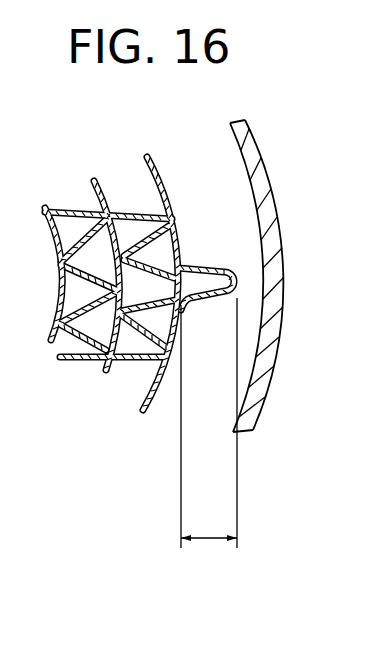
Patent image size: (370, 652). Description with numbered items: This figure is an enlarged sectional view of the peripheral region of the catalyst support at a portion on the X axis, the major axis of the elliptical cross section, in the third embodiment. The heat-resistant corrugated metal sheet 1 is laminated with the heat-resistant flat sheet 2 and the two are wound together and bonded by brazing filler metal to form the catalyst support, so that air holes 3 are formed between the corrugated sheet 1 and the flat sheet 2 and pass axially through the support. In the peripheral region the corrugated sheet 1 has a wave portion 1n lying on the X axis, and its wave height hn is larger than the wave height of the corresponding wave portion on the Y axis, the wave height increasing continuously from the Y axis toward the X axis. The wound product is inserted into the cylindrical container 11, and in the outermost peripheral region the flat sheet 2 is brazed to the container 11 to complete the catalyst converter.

The corrugated metal sheet 1 is at (114, 210).
The flat sheet 2 is at (153, 167).
The air holes 3 is at (58, 260).
The wave portion on the X axis 1n is at (236, 277).
The cylindrical container 11 is at (263, 172).
The wave height of the wave portion on the X axis hn is at (212, 538).